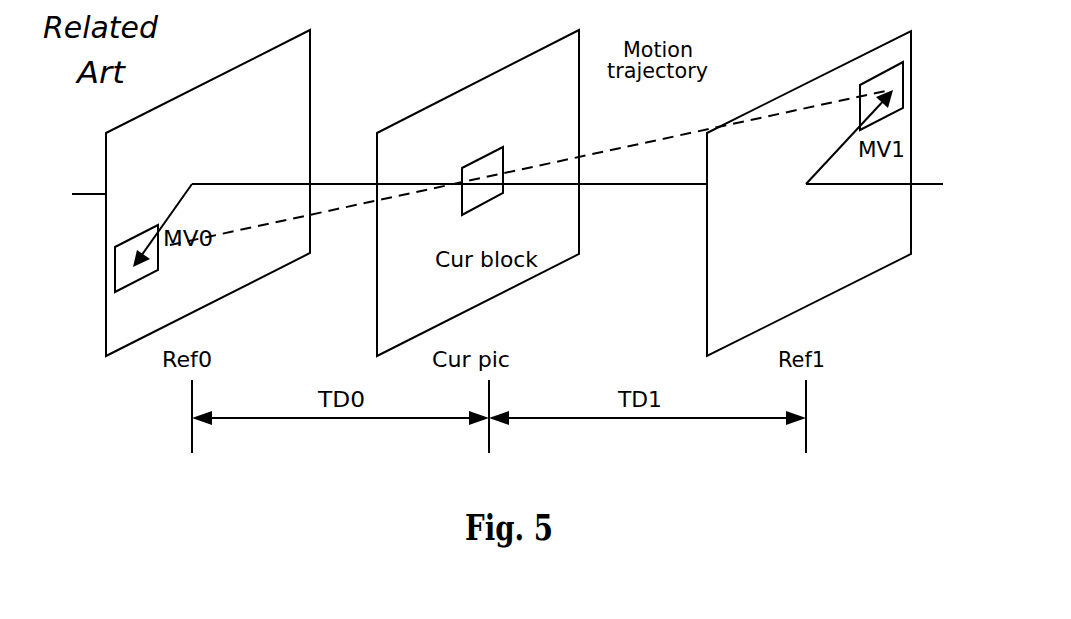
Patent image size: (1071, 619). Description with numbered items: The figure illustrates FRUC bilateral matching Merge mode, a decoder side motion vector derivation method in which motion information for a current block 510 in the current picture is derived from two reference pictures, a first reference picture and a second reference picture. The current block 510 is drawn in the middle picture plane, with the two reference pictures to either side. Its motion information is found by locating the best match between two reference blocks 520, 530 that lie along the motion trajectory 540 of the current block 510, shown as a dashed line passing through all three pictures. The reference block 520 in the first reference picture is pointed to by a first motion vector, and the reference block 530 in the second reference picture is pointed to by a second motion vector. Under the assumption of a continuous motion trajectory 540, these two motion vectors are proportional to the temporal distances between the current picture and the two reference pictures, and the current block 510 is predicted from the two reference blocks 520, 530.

The current block 510 is at (483, 157).
The reference block 520 is at (135, 236).
The reference block 530 is at (878, 73).
The motion trajectory 540 is at (668, 138).